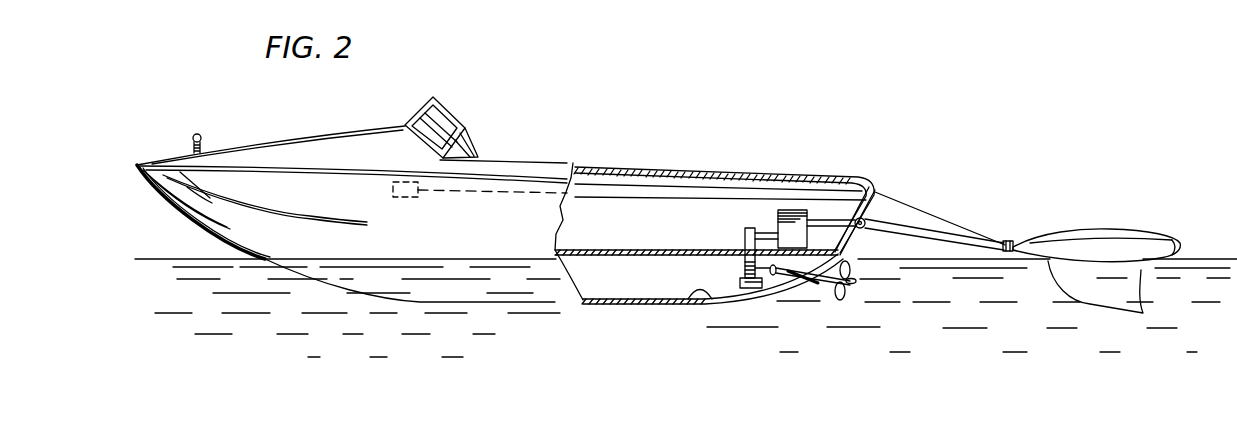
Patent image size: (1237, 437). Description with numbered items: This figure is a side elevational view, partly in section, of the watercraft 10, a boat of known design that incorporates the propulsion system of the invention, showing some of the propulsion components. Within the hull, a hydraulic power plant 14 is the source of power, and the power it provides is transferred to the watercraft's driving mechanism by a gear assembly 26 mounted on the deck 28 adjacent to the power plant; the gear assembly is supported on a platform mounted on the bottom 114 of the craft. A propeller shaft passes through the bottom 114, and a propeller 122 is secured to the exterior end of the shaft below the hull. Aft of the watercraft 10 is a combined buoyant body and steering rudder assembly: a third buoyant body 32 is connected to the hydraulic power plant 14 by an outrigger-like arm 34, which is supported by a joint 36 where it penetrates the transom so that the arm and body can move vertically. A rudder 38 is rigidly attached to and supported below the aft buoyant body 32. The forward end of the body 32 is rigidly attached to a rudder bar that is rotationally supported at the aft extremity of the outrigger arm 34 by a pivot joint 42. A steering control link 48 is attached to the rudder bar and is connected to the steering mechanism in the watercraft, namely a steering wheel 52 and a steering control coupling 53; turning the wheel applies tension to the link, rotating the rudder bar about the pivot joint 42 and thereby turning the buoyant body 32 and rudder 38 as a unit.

The watercraft 10 is at (261, 114).
The hydraulic power plant 14 is at (793, 210).
The gear assembly 26 is at (744, 238).
The deck 28 is at (610, 249).
The third buoyant body 32 is at (1112, 228).
The outrigger-like arm 34 is at (948, 235).
The joint 36 is at (867, 219).
The rudder 38 is at (1107, 290).
The pivot joint 42 is at (1011, 240).
The steering control link 48 is at (682, 168).
The steering wheel 52 is at (466, 144).
The steering control coupling 53 is at (397, 198).
The bottom 114 is at (703, 303).
The propeller 122 is at (840, 300).